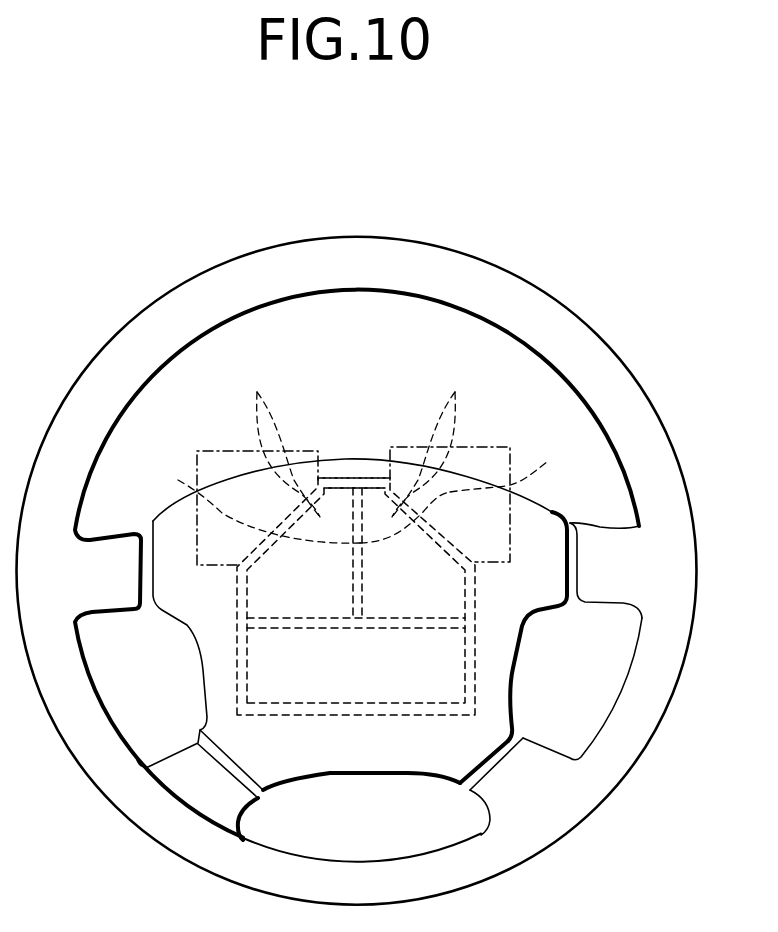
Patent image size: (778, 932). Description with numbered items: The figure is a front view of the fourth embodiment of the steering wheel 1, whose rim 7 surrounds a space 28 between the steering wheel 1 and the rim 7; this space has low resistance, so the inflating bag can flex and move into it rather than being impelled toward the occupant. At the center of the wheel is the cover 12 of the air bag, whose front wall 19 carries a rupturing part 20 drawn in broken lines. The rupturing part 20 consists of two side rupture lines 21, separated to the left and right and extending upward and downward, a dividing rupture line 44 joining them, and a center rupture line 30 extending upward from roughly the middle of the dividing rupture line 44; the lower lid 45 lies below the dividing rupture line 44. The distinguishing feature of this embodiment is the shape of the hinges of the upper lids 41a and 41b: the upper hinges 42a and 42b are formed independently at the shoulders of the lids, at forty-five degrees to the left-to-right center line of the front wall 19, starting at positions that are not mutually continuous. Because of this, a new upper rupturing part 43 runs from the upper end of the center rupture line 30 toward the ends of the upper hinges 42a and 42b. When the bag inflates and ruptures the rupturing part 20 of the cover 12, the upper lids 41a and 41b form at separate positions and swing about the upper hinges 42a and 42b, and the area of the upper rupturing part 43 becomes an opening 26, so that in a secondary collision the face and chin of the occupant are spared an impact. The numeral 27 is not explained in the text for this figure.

The steering wheel 1 is at (553, 262).
The rim 7 is at (449, 257).
The space 28 is at (270, 328).
The cover 12 is at (485, 628).
The front wall 19 is at (490, 668).
The rupturing part 20 is at (475, 698).
The side rupture lines 21 is at (235, 597).
The opening 26 is at (343, 480).
The lower cover 27 is at (333, 715).
The center rupture line 30 is at (425, 527).
The upper lid 41a is at (275, 435).
The upper lid 41b is at (440, 435).
The upper hinge 42a is at (240, 508).
The upper hinge 42b is at (494, 504).
The upper rupturing part 43 is at (356, 478).
The dividing rupture line 44 is at (295, 628).
The lower lid 45 is at (412, 678).